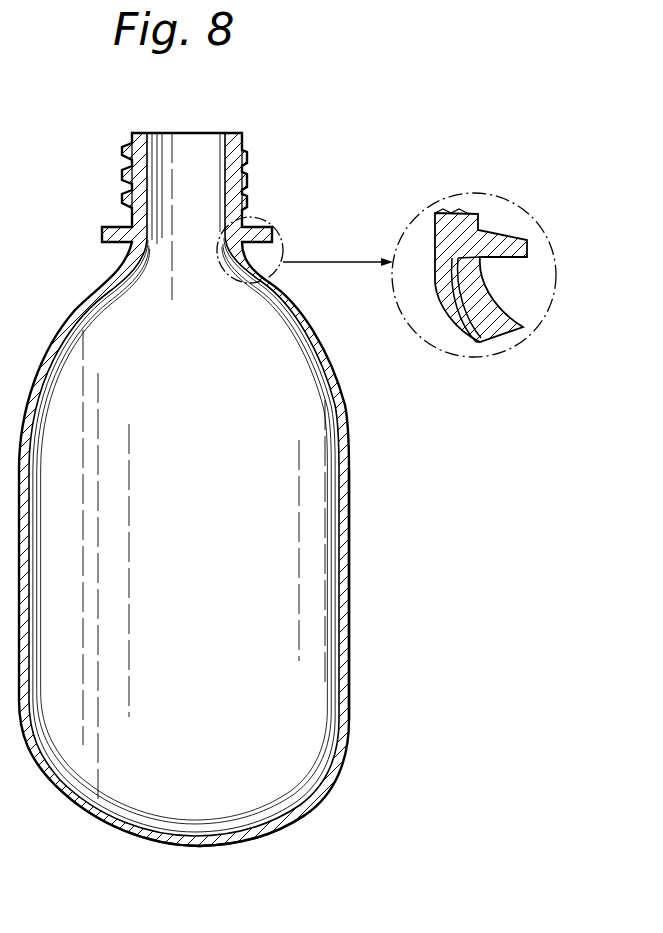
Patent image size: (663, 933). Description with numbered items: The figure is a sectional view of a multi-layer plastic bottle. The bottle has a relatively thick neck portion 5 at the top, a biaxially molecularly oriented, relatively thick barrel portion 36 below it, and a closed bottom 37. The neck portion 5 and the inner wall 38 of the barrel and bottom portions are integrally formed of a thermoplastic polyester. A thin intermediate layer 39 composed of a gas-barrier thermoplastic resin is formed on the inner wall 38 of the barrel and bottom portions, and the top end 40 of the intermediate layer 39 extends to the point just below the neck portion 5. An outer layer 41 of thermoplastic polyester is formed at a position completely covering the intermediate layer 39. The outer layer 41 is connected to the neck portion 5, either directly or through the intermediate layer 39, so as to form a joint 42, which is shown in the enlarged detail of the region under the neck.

The neck portion 5 is at (230, 180).
The barrel portion 36 is at (354, 501).
The closed bottom 37 is at (230, 838).
The inner wall 38 is at (336, 526).
The intermediate layer 39 is at (487, 338).
The top end of the intermediate layer 40 is at (482, 270).
The outer layer 41 is at (350, 597).
The joint 42 is at (482, 259).